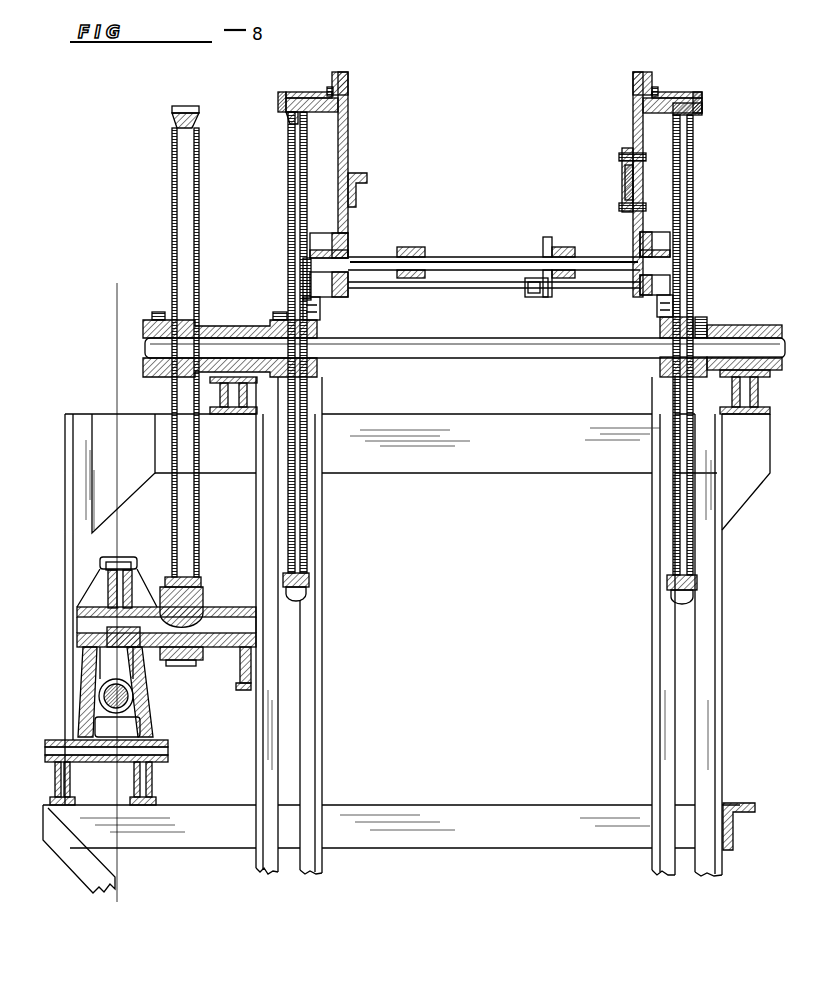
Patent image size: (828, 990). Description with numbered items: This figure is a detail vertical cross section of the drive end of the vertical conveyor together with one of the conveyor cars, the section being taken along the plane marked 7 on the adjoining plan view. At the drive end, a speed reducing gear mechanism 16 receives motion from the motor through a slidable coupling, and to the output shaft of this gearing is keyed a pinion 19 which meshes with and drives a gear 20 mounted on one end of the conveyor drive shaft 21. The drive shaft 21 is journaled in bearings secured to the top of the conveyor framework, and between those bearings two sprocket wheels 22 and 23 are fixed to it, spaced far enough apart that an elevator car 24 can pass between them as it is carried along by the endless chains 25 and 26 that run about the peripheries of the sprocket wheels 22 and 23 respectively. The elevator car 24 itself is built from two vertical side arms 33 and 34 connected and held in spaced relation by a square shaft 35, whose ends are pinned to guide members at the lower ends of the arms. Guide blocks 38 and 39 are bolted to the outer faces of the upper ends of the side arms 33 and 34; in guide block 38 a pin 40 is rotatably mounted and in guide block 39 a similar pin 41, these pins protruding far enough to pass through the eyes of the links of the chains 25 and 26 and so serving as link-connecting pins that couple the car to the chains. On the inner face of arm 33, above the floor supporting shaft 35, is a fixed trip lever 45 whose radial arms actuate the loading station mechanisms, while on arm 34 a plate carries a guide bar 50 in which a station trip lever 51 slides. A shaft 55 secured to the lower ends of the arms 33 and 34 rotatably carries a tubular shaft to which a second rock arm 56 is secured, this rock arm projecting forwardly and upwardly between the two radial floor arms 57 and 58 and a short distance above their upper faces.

The section line 8—8 in Figure 7 is at (115, 592).
The speed reducing gear mechanism 16 is at (92, 653).
The pinion 19 is at (183, 667).
The gear 20 is at (198, 241).
The conveyor drive shaft 21 is at (488, 363).
The sprocket wheel 22 is at (300, 246).
The sprocket wheel 23 is at (700, 260).
The elevator car 24 is at (428, 280).
The endless chain 25 is at (282, 93).
The endless chain 26 is at (690, 92).
The vertical side arm 33 is at (349, 143).
The vertical side arm 34 is at (635, 110).
The square shaft 35 is at (487, 257).
The guide block 38 is at (322, 92).
The guide block 39 is at (658, 92).
The pin 40 is at (284, 114).
The pin 41 is at (702, 114).
The fixed trip lever 45 is at (362, 177).
The guide bar 50 is at (628, 150).
The station trip lever 51 is at (632, 187).
The shaft 55 is at (494, 299).
The second rock arm 56 is at (543, 241).
The radial floor arm 57 is at (412, 247).
The radial floor arm 58 is at (566, 247).